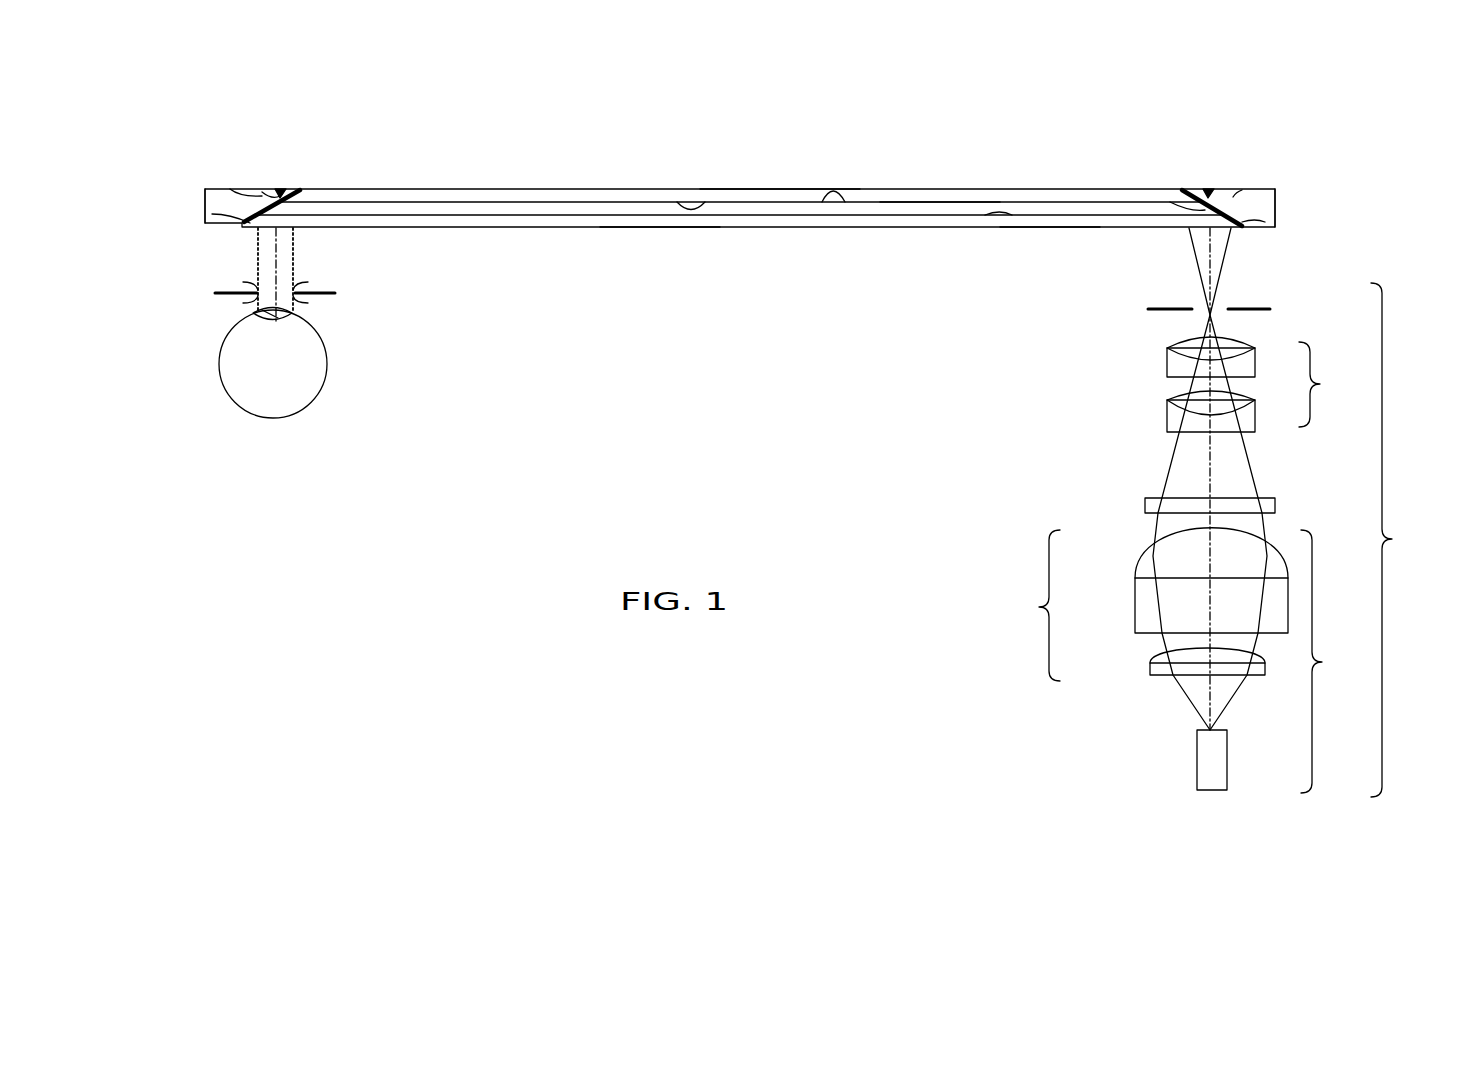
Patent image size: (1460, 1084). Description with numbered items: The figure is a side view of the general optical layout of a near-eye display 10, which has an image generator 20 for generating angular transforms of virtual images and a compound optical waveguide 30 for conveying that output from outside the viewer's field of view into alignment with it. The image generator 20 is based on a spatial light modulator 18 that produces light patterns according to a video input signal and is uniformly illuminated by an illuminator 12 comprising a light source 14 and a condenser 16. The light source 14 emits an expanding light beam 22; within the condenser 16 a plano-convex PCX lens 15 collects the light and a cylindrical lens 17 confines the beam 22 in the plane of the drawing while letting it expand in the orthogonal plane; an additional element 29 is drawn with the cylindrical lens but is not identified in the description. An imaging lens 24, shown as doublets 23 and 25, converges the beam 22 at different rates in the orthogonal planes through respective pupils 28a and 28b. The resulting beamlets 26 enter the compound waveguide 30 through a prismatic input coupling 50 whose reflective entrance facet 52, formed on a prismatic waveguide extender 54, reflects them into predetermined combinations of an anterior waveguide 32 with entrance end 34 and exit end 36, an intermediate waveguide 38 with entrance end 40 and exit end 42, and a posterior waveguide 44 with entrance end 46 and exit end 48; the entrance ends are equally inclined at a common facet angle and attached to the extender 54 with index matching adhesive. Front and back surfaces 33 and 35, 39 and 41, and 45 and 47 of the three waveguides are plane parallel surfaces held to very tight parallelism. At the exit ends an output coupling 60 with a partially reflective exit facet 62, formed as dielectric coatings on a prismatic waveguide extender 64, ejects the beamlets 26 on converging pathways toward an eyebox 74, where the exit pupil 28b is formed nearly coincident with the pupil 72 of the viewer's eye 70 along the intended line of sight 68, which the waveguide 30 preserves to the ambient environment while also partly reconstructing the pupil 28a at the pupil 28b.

The near-eye display 10 is at (476, 127).
The illuminator 12 is at (1337, 661).
The light source 14 is at (1197, 755).
The PCX lens 15 is at (1150, 667).
The condenser 16 is at (1018, 605).
The cylindrical lens 17 is at (1153, 562).
The spatial light modulator 18 is at (1271, 497).
The image generator 20 is at (1407, 540).
The expanding light beam 22 is at (1233, 693).
The doublet 23 is at (1167, 410).
The imaging lens 24 is at (1331, 384).
The doublet 25 is at (1167, 360).
The beamlet 26 is at (297, 250).
The pupil 28a is at (1197, 305).
The exit pupil 28b is at (292, 290).
The lens 29 is at (1210, 598).
The compound optical waveguide 30 is at (584, 182).
The anterior waveguide 32 is at (780, 196).
The front surface 33 is at (660, 194).
The entrance end 34 is at (1209, 186).
The back surface 35 is at (703, 201).
The exit end 36 is at (288, 186).
The intermediate waveguide 38 is at (934, 210).
The front surface 39 is at (821, 202).
The entrance end 40 is at (1250, 200).
The back surface 41 is at (878, 216).
The exit end 42 is at (213, 186).
The posterior waveguide 44 is at (652, 223).
The front surface 45 is at (990, 214).
The entrance end 46 is at (1265, 222).
The back surface 47 is at (1046, 228).
The exit end 48 is at (242, 222).
The prismatic input coupling 50 is at (1218, 192).
The reflective entrance facet 52 is at (1200, 210).
The prismatic waveguide extender 54 is at (1233, 197).
The output coupling 60 is at (277, 193).
The partially reflective exit facet 62 is at (310, 200).
The prismatic waveguide extender 64 is at (262, 193).
The line of sight 68 is at (273, 262).
The viewer's eye 70 is at (303, 401).
The pupil 72 is at (291, 312).
The eyebox 74 is at (253, 312).